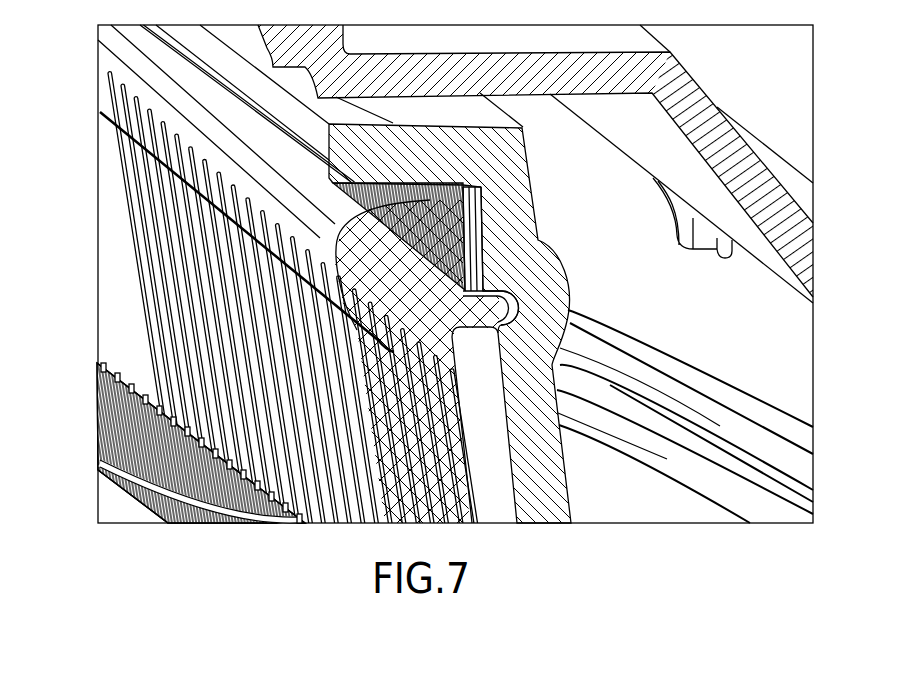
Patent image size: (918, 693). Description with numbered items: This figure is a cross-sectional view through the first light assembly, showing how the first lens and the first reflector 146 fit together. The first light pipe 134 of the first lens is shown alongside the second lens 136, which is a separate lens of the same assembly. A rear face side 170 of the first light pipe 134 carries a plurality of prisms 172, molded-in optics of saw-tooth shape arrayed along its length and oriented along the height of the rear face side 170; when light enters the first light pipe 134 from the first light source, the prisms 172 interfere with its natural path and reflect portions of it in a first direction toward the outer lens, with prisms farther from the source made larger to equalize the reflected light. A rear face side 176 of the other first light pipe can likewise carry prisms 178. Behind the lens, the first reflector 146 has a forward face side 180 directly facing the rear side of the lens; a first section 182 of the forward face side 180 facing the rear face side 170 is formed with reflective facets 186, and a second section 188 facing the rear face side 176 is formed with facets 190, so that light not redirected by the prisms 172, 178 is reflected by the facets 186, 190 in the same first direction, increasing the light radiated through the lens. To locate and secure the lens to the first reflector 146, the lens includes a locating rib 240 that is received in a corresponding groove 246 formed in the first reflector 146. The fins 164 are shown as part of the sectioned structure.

The first light pipe 134 is at (108, 63).
The second lens 136 is at (332, 540).
The first reflector 146 is at (541, 505).
The fins 164 is at (117, 292).
The rear face side 170 is at (465, 283).
The prisms 172 is at (407, 190).
The rear face side 176 is at (245, 527).
The prisms 178 is at (106, 441).
The forward face side 180 is at (497, 400).
The first section 182 is at (478, 205).
The reflective surfaces or facets 186 is at (477, 237).
The second section 188 is at (113, 350).
The reflective surfaces or facets 190 is at (287, 527).
The locating rib 240 is at (507, 317).
The groove 246 is at (513, 307).